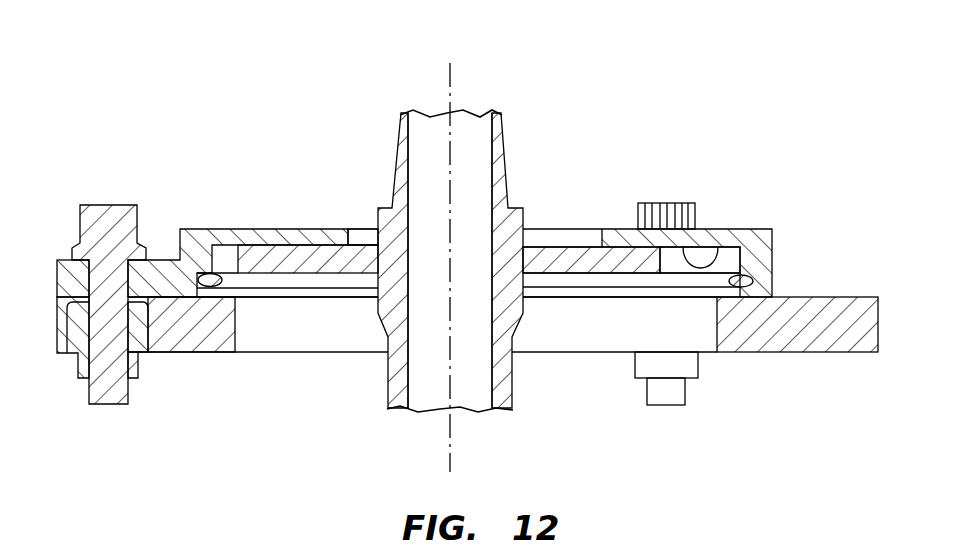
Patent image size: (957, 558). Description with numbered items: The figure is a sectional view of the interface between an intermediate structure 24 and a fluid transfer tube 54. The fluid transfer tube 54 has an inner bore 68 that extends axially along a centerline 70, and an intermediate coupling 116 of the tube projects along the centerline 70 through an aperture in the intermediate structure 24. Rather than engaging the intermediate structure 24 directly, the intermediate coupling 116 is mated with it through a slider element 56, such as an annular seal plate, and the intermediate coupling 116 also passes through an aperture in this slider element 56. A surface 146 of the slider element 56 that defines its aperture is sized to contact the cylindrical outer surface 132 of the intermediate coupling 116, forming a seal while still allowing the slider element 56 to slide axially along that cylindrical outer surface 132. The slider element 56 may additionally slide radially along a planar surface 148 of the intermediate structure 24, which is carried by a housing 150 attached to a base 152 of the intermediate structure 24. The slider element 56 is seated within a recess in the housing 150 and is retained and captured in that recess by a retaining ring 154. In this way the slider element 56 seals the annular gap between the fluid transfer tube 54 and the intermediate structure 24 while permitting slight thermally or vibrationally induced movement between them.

The intermediate structure 24 is at (870, 280).
The fluid transfer tube 54 is at (503, 101).
The slider element 56 is at (585, 260).
The inner bore 68 is at (428, 133).
The centerline 70 is at (452, 460).
The intermediate coupling 116 is at (528, 332).
The cylindrical outer surface 132 is at (378, 310).
The surface 146 is at (380, 260).
The surface 148 is at (707, 266).
The housing 150 is at (226, 216).
The base 152 is at (53, 352).
The retaining ring 154 is at (208, 290).